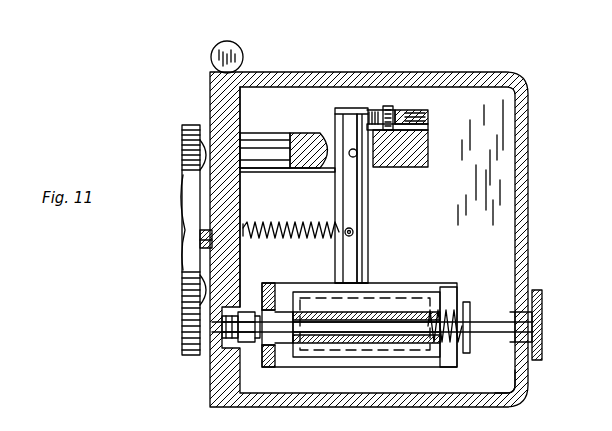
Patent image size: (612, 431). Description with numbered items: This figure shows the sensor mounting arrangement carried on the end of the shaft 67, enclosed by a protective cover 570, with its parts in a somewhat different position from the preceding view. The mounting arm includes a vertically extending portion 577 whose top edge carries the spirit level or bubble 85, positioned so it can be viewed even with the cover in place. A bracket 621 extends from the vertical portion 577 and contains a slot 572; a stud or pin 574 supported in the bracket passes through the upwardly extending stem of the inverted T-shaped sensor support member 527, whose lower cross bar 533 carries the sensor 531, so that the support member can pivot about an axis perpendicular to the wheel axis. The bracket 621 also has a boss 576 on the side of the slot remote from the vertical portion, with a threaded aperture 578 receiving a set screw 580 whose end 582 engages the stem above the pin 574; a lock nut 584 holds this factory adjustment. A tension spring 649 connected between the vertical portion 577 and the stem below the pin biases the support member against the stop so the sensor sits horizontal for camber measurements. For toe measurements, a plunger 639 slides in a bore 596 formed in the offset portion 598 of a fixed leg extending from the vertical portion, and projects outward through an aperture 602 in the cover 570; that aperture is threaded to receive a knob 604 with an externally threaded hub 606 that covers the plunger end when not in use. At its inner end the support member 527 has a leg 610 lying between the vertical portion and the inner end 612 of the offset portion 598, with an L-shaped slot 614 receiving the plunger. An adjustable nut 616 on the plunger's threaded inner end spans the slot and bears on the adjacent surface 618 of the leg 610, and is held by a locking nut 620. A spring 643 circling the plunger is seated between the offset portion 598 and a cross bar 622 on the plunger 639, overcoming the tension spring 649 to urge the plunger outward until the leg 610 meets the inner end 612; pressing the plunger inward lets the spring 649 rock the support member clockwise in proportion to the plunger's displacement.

The ball 85 is at (232, 40).
The shaft 67 is at (200, 240).
The cover 570 is at (527, 153).
The vertically extending portion 577 is at (212, 91).
The aperture 602 is at (527, 362).
The surface 618 is at (238, 302).
The bracket 621 is at (256, 132).
The sensor 531 is at (345, 201).
The slot 572 is at (368, 160).
The stud or pin 574 is at (350, 156).
The sensor support member 527 is at (382, 265).
The tension spring 649 is at (298, 222).
The threaded aperture 578 is at (432, 125).
The set screw 580 is at (400, 110).
The boss 576 is at (428, 108).
The lock nut 584 is at (388, 105).
The end of set screw 582 is at (374, 110).
The leg 610 is at (268, 283).
The bore 596 is at (322, 312).
The lower cross bar 533 is at (448, 286).
The nut 616 is at (280, 345).
The inner end 612 is at (290, 345).
The offset portion 598 is at (350, 345).
The plunger 639 is at (368, 348).
The locking nut 620 is at (240, 340).
The L-shaped slot 614 is at (232, 345).
The spring 643 is at (445, 344).
The cross bar 622 is at (467, 301).
The externally threaded hub 606 is at (516, 318).
The knob 604 is at (543, 293).